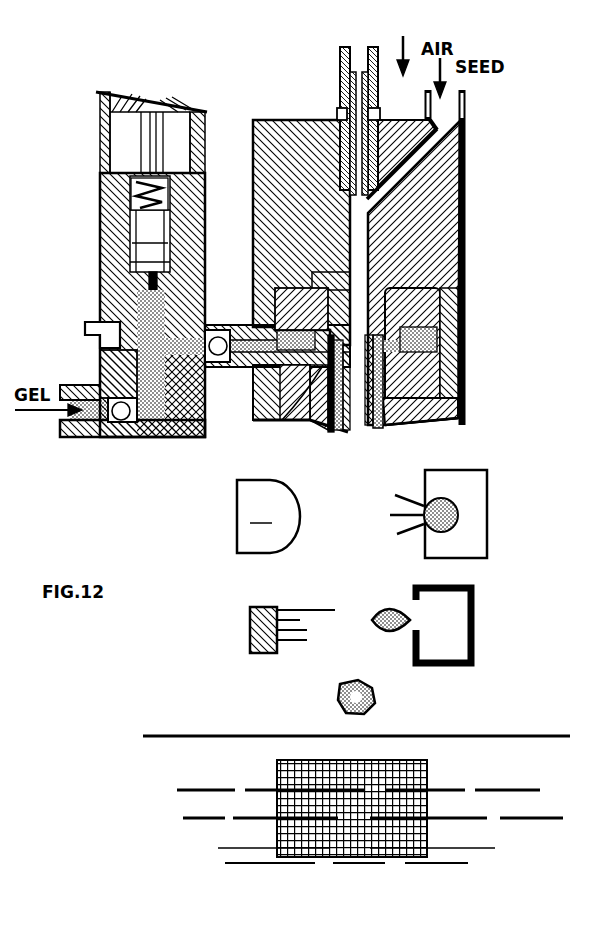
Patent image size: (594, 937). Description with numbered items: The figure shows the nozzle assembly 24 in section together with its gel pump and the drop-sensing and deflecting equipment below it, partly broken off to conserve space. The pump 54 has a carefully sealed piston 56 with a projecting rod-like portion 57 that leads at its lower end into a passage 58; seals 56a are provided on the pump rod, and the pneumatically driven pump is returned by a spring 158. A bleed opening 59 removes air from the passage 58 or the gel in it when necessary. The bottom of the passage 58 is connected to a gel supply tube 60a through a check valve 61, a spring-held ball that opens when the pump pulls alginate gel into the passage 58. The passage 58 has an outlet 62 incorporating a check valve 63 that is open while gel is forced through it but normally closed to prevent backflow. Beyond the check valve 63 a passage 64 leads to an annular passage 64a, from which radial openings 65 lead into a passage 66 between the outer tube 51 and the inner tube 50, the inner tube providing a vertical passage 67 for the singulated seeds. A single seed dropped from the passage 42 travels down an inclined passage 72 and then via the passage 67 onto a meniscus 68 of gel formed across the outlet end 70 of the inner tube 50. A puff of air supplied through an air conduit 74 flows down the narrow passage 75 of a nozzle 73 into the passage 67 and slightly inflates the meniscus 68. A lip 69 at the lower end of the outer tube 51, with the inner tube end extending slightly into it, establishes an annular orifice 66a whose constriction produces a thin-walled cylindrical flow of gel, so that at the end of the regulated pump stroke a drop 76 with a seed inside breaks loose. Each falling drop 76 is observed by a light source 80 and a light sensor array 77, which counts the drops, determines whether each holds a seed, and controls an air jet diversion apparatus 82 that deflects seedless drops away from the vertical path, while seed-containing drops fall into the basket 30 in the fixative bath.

The nozzle assembly 24 is at (486, 230).
The basket 30 is at (430, 770).
The passage 42 is at (466, 106).
The inner tube 50 is at (455, 401).
The outer tube 51 is at (418, 419).
The pump 54 is at (100, 218).
The piston 56 is at (108, 113).
The seals 56a is at (150, 224).
The rod-like portion 57 is at (150, 283).
The passage 58 is at (137, 358).
The bleed opening 59 is at (135, 323).
The gel supply tube 60a is at (68, 437).
The check valve 61 is at (124, 421).
The outlet 62 is at (200, 338).
The check valve 63 is at (218, 340).
The passage 64 is at (252, 367).
The annular passage 64a is at (440, 333).
The radial openings 65 is at (455, 366).
The passage 66 is at (273, 422).
The annular orifice 66a is at (373, 429).
The passage 67 is at (445, 299).
The meniscus 68 is at (345, 436).
The lip 69 is at (305, 397).
The outlet end 70 is at (340, 434).
The inclined passage 72 is at (417, 160).
The nozzle 73 is at (338, 113).
The air conduit 74 is at (340, 62).
The narrow passage 75 is at (360, 141).
The drop 76 is at (338, 693).
The light sensor array 77 is at (268, 516).
The light source 80 is at (470, 506).
The air jet diversion apparatus 82 is at (250, 630).
The spring 158 is at (142, 176).